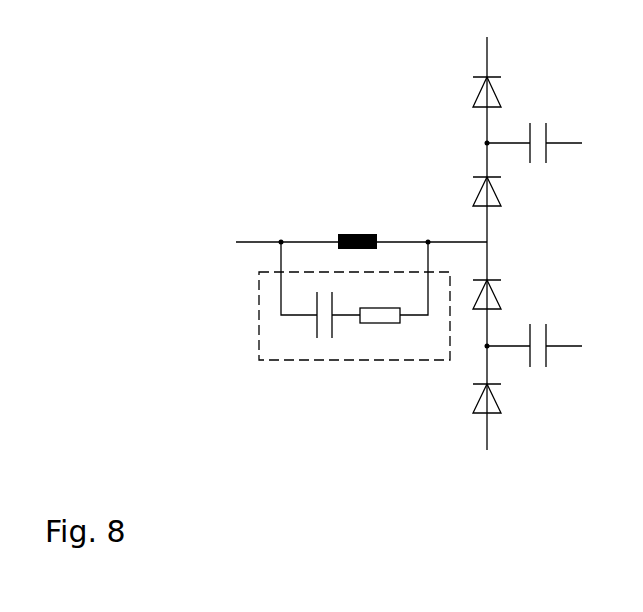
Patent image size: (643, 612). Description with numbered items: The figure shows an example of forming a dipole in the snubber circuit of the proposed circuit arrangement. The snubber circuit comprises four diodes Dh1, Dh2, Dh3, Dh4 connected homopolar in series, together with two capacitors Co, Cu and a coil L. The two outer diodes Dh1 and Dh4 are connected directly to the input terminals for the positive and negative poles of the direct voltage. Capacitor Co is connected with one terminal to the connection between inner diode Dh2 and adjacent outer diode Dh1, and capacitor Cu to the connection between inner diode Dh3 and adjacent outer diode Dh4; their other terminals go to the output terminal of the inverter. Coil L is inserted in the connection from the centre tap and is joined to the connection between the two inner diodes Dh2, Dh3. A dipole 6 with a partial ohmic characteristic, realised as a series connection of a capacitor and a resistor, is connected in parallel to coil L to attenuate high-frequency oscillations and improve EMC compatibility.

The outer diode Dh1 is at (453, 95).
The inner diode Dh2 is at (520, 194).
The inner diode Dh3 is at (520, 292).
The outer diode Dh4 is at (454, 406).
The capacitor Co is at (534, 123).
The capacitor Cu is at (534, 366).
The coil L is at (357, 223).
The dipole 6 is at (260, 360).